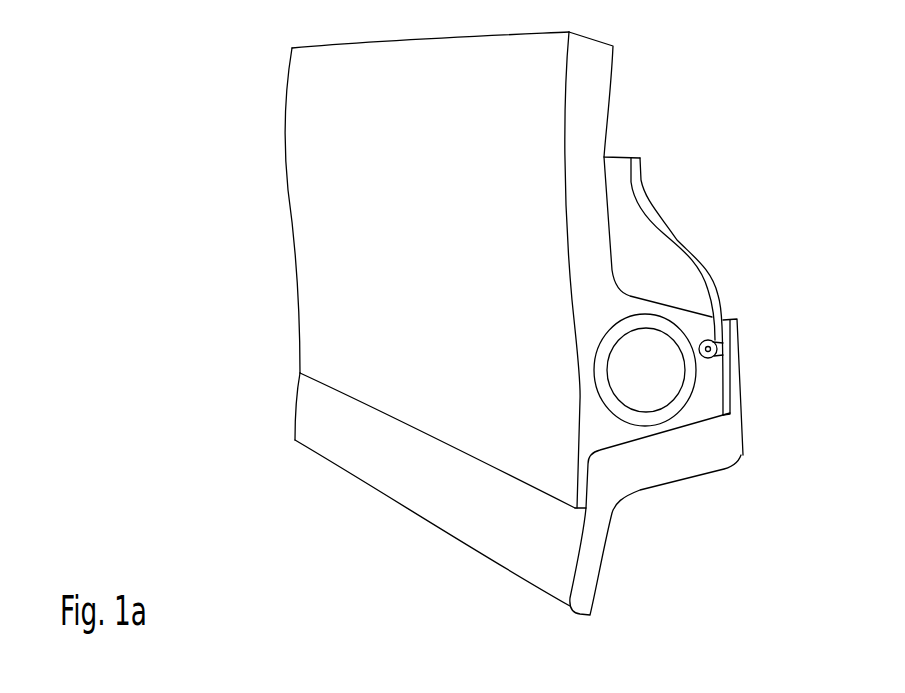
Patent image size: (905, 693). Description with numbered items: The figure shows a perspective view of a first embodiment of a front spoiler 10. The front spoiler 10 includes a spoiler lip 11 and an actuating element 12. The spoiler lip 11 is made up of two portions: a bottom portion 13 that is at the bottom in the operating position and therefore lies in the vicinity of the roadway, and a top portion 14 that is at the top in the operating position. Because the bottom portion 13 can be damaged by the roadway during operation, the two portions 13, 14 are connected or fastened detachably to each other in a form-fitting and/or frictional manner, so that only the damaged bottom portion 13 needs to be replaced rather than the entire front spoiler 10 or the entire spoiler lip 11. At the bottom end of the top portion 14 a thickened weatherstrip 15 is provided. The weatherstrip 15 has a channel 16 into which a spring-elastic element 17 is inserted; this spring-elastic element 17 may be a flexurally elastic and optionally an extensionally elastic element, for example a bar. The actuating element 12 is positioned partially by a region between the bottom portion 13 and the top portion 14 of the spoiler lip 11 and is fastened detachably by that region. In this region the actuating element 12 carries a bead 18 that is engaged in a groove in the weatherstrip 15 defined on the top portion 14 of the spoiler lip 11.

The front spoiler 10 is at (677, 120).
The spoiler lip 11 is at (456, 323).
The actuating element 12 is at (677, 242).
The bottom portion 13 is at (488, 494).
The top portion 14 is at (298, 272).
The weatherstrip 15 is at (683, 310).
The channel 16 is at (652, 412).
The spring-elastic element 17 is at (680, 393).
The bead 18 is at (720, 352).